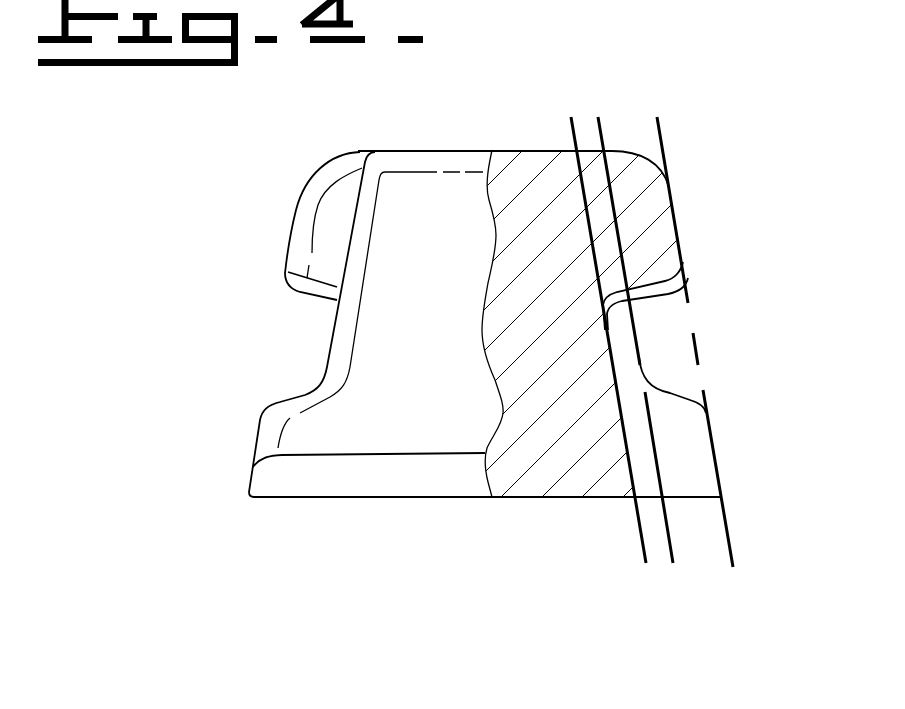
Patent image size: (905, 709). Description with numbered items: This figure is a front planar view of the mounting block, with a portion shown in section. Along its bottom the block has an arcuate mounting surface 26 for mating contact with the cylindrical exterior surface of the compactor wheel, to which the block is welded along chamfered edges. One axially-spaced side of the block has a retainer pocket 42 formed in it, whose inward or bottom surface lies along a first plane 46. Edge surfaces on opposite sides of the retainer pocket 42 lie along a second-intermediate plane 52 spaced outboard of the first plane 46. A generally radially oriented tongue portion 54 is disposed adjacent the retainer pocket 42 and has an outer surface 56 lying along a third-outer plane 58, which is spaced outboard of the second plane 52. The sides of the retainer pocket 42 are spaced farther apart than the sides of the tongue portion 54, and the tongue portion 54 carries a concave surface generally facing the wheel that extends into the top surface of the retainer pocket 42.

The arcuate mounting surface 26 is at (423, 497).
The retainer pocket 42 is at (665, 324).
The first plane 46 is at (640, 525).
The second-intermediate plane 52 is at (675, 557).
The tongue portion 54 is at (665, 230).
The outer surface 56 is at (683, 255).
The third-outer plane 58 is at (662, 137).